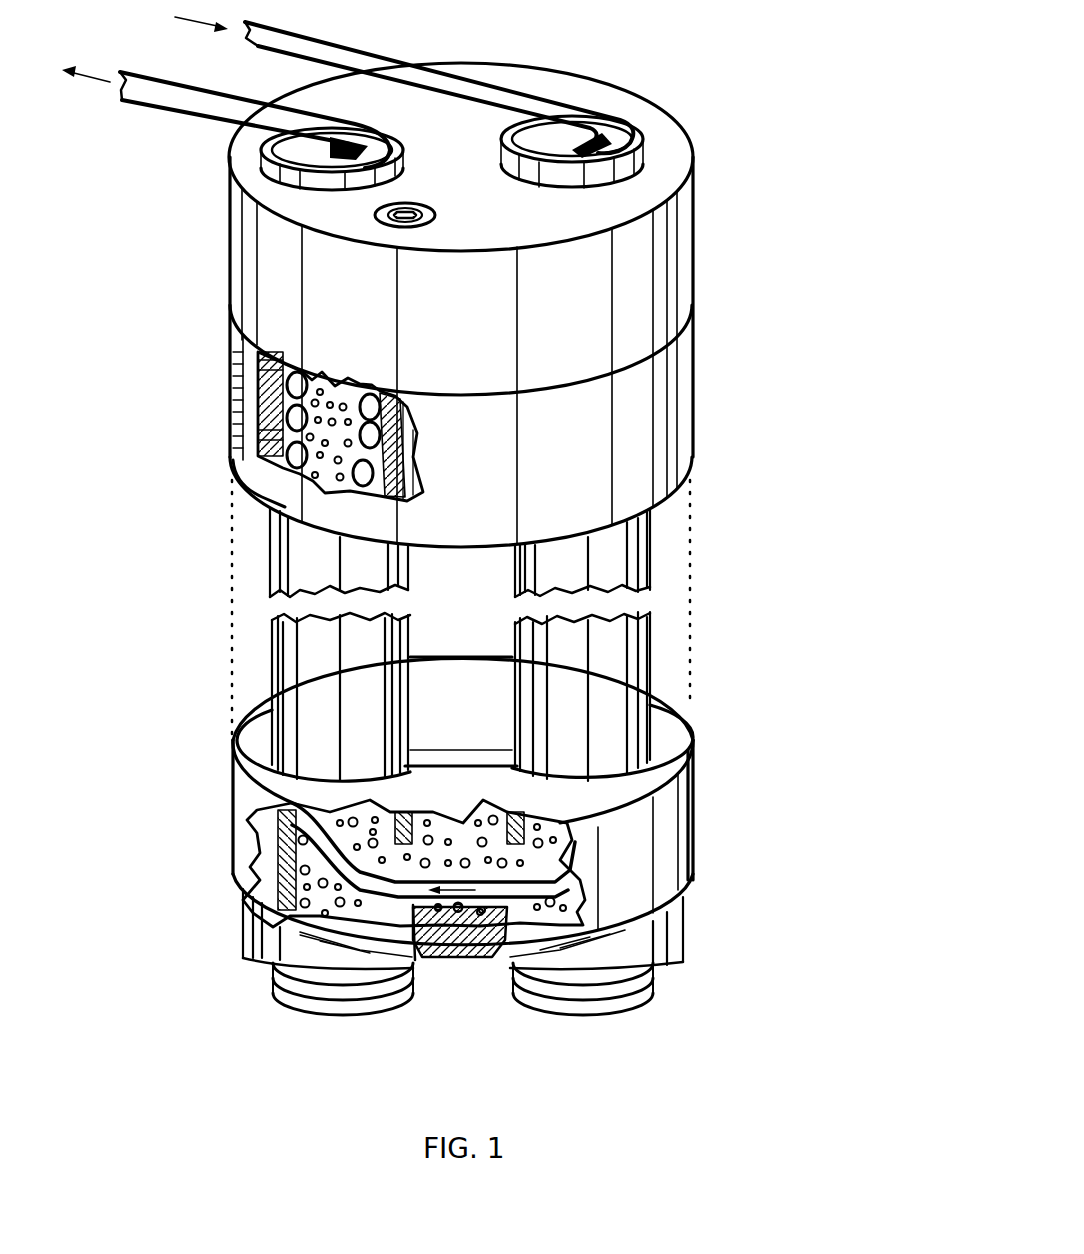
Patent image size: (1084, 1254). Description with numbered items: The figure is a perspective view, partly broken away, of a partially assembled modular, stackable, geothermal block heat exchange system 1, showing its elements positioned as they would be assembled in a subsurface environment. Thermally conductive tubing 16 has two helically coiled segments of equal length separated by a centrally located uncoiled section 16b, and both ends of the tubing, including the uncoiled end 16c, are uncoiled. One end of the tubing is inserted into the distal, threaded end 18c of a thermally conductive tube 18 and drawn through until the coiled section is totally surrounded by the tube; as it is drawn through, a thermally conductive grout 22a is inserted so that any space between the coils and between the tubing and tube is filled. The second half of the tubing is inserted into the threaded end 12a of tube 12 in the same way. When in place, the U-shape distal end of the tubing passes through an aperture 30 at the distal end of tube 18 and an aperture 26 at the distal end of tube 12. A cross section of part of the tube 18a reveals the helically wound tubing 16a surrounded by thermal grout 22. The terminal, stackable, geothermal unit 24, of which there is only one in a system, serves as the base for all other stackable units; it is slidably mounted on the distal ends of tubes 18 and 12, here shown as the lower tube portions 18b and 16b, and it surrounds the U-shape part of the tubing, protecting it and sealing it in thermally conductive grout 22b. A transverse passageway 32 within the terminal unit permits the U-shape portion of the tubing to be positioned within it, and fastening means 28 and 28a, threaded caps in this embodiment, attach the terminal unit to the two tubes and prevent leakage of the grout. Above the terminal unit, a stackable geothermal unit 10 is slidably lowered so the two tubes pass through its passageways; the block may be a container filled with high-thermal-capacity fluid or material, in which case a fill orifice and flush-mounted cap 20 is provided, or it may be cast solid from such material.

The modular, stackable, geothermal block heat exchange system 1 is at (652, 66).
The stackable geothermal unit 10 is at (694, 202).
The thermally conductive tube 12 is at (655, 125).
The threaded end of tube 12a is at (647, 990).
The thermally conductive tubing 16 is at (160, 107).
The helically wound tubing 16a is at (258, 425).
The uncoiled section of tubing 16b is at (247, 772).
The uncoiled end of tubing 16c is at (398, 56).
The thermally conductive tube 18 is at (257, 143).
The tube cross section 18a is at (258, 398).
The tube 18b is at (268, 650).
The threaded end of tube 18c is at (278, 998).
The fill orifice and flush-mounted cap 20 is at (372, 213).
The thermal grout 22 is at (260, 485).
The thermally conductive grout 22a is at (300, 843).
The thermally conductive grout 22b is at (458, 838).
The terminal stackable geothermal unit 24 is at (687, 722).
The aperture 26 is at (507, 907).
The fastening means 28 is at (243, 937).
The fastening means 28a is at (683, 930).
The aperture 30 is at (417, 907).
The transverse passageway 32 is at (494, 742).